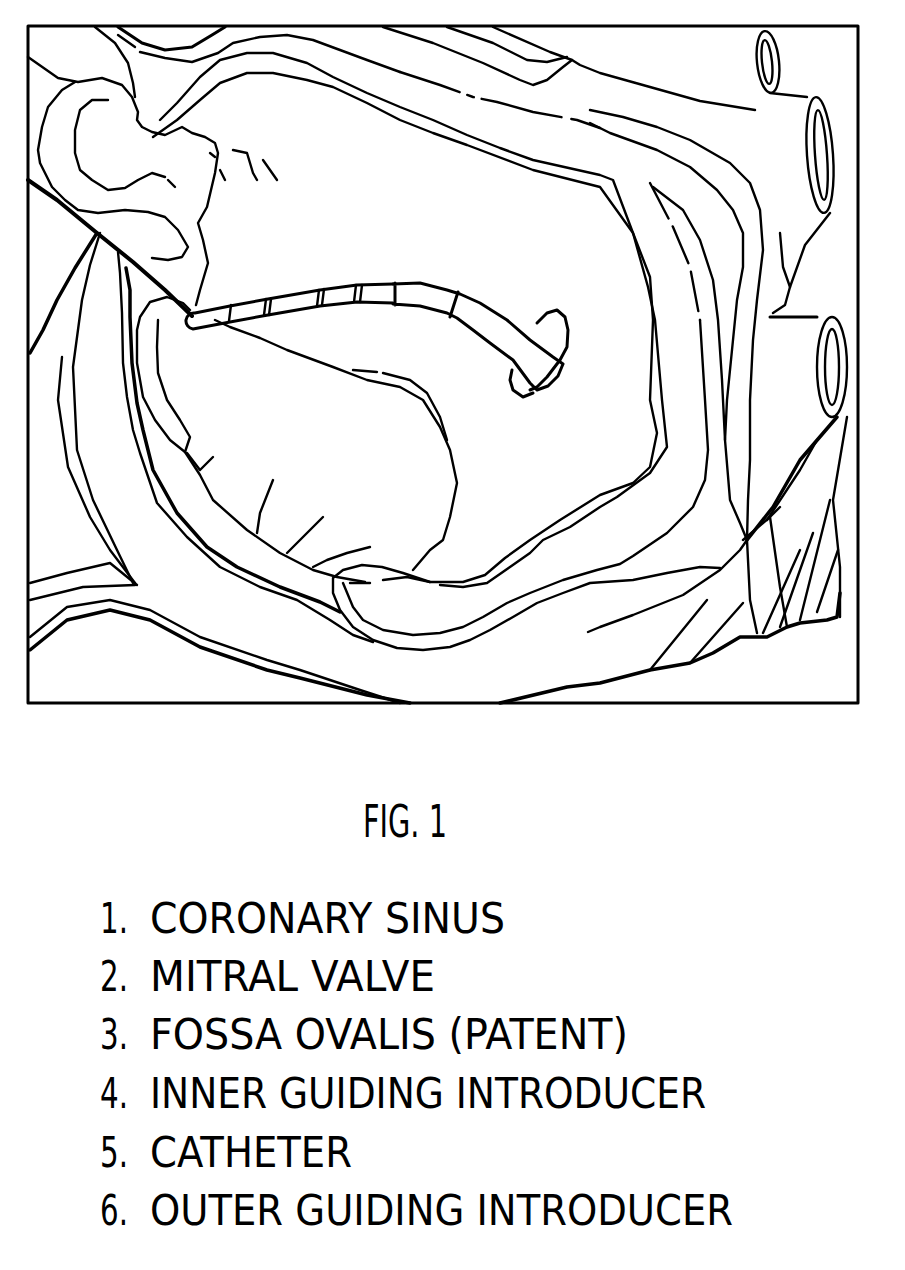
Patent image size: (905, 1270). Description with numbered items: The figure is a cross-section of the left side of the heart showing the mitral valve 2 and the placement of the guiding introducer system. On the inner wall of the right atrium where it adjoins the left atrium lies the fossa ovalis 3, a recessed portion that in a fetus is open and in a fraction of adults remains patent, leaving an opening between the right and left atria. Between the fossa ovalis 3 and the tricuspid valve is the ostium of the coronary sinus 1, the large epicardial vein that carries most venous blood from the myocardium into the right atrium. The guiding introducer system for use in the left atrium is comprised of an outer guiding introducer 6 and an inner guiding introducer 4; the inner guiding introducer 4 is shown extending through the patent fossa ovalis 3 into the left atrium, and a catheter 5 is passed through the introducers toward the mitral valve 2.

The coronary sinus 1 is at (245, 447).
The mitral valve 2 is at (322, 445).
The fossa ovalis (patent) 3 is at (560, 322).
The inner guiding introducer 4 is at (478, 307).
The catheter 5 is at (289, 278).
The outer guiding introducer 6 is at (498, 391).